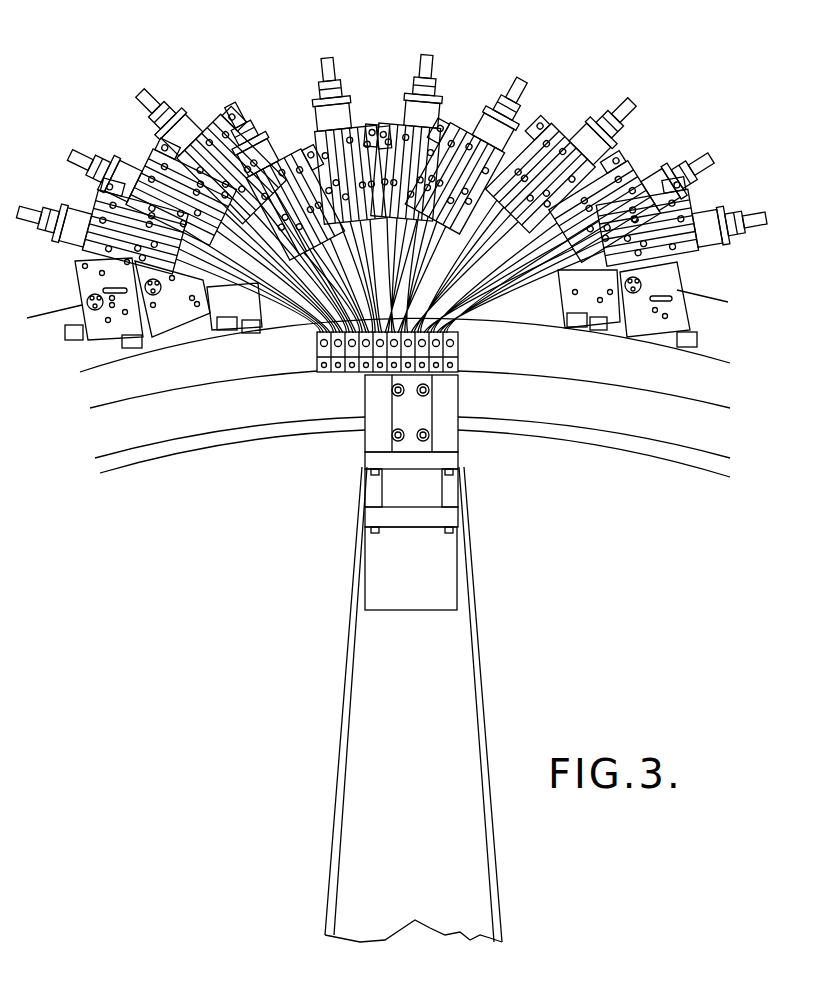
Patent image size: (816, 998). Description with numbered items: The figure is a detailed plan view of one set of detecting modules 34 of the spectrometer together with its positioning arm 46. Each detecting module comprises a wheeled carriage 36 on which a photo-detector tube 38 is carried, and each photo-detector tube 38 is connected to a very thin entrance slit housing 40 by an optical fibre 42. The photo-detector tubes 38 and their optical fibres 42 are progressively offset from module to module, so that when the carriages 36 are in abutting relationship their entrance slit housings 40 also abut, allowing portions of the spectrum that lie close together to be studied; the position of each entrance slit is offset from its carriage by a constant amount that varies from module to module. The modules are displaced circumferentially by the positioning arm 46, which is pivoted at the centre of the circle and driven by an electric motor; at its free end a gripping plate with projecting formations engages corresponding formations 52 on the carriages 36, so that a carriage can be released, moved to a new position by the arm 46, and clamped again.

The set of detecting modules 34 is at (597, 67).
The wheeled carriage 36 is at (68, 192).
The photo-detector tube 38 is at (90, 248).
The entrance slit housing 40 is at (347, 373).
The optical fibre 42 is at (265, 287).
The positioning arm 46 is at (477, 650).
The formations 52 is at (133, 300).